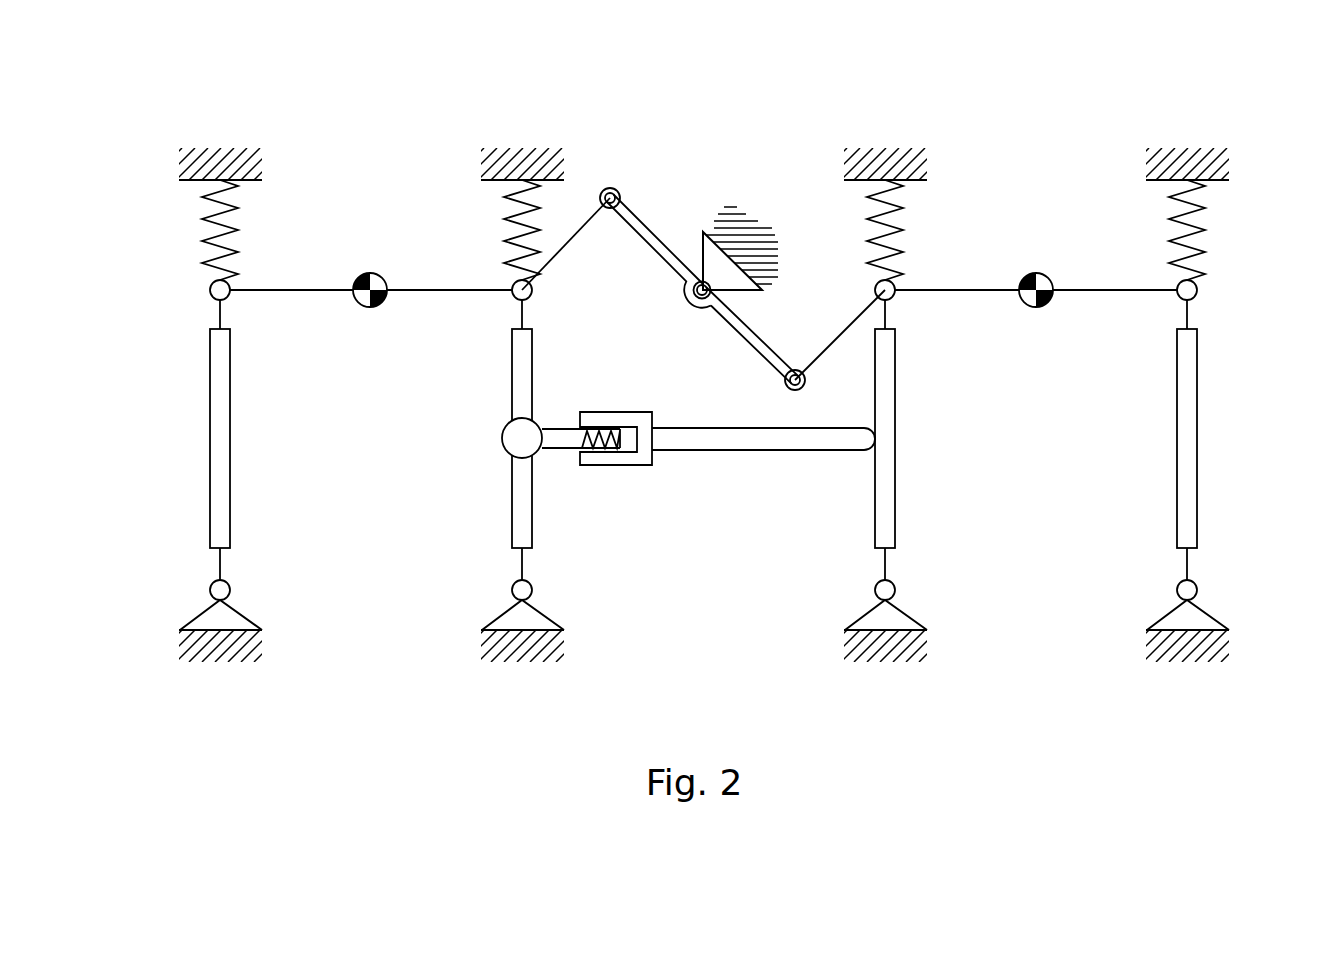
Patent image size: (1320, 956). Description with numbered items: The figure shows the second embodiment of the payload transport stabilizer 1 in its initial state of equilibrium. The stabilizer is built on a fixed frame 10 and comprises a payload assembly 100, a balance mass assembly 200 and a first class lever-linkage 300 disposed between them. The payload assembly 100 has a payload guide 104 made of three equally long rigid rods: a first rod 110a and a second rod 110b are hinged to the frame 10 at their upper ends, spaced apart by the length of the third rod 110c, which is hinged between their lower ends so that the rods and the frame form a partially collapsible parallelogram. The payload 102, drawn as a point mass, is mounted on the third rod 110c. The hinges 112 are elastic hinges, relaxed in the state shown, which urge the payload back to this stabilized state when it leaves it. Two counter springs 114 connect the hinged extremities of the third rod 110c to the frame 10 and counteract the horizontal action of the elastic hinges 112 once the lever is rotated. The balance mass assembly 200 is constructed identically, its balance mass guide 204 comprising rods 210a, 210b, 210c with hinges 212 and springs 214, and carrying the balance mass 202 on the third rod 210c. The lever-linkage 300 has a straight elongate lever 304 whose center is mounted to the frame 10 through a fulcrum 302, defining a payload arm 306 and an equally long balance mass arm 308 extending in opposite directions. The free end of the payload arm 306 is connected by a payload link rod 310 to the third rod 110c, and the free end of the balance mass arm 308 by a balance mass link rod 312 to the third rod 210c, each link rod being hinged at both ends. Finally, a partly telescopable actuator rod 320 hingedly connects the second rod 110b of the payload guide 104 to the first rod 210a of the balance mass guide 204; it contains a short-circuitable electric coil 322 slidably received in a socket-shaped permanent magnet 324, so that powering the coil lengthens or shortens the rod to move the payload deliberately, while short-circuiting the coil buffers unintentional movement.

The payload transport stabilizer 1 is at (1267, 125).
The frame 10 is at (220, 165).
The payload assembly 100 is at (372, 135).
The payload 102 is at (385, 302).
The payload guide 104 is at (178, 438).
The first payload guide rod 110a is at (232, 520).
The second payload guide rod 110b is at (512, 520).
The third payload guide rod 110c is at (304, 287).
The elastic hinge 112 is at (213, 295).
The counter spring 114 is at (207, 210).
The balance mass assembly 200 is at (1035, 135).
The balance mass 202 is at (1050, 300).
The balance mass guide 204 is at (1228, 439).
The first balance mass guide rod 210a is at (897, 520).
The second balance mass guide rod 210b is at (1198, 520).
The third balance mass guide rod 210c is at (1105, 287).
The hinge 212 is at (895, 283).
The spring 214 is at (902, 230).
The first class lever-linkage 300 is at (703, 135).
The fulcrum 302 is at (698, 298).
The lever 304 is at (641, 298).
The payload arm 306 is at (656, 245).
The balance mass arm 308 is at (753, 338).
The payload link rod 310 is at (567, 245).
The balance mass link rod 312 is at (840, 332).
The actuator rod 320 is at (701, 438).
The electric coil 322 is at (559, 438).
The permanent magnet 324 is at (644, 456).